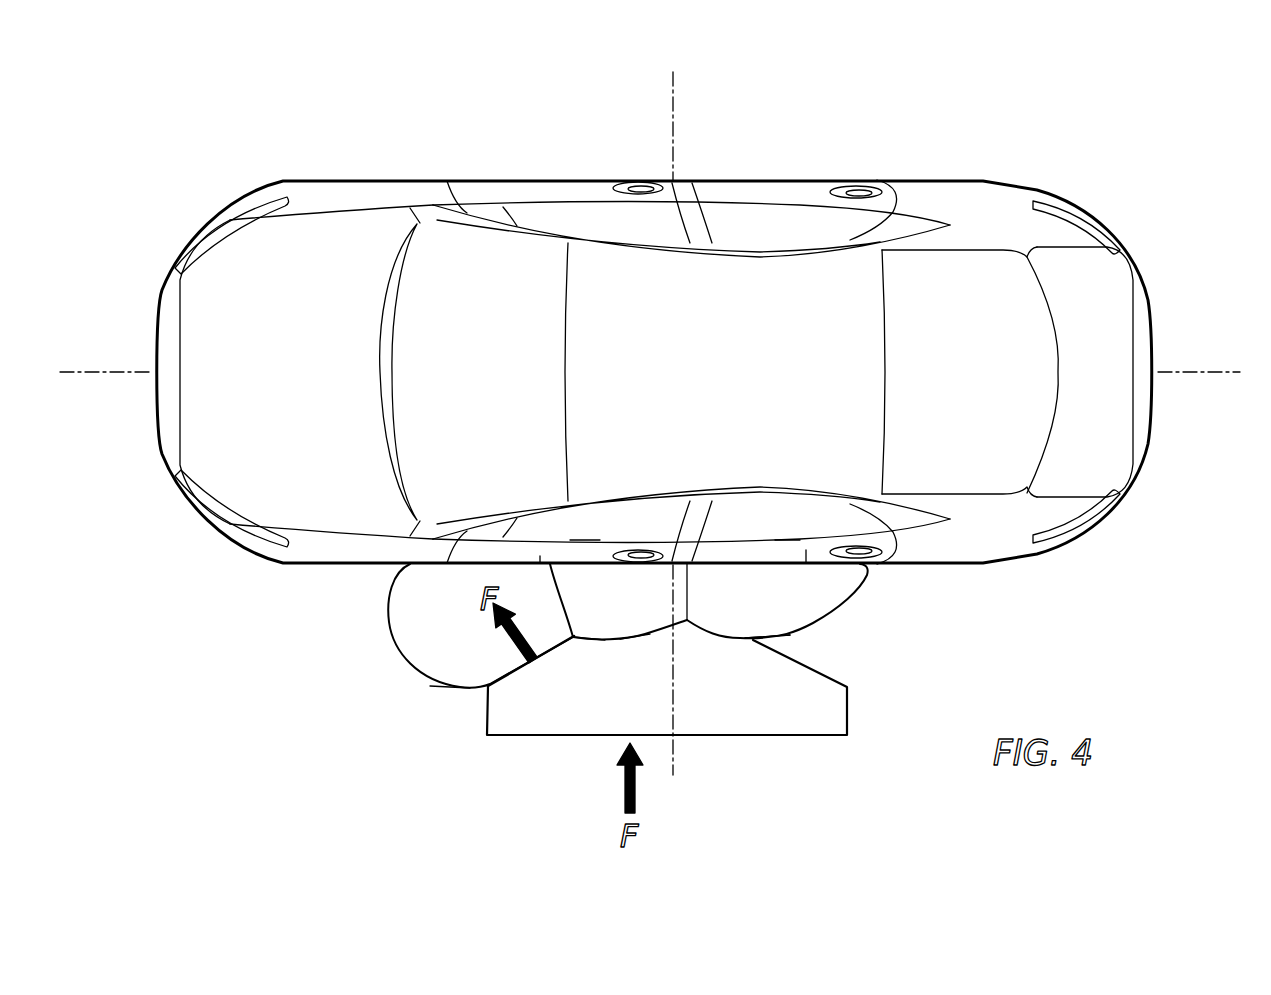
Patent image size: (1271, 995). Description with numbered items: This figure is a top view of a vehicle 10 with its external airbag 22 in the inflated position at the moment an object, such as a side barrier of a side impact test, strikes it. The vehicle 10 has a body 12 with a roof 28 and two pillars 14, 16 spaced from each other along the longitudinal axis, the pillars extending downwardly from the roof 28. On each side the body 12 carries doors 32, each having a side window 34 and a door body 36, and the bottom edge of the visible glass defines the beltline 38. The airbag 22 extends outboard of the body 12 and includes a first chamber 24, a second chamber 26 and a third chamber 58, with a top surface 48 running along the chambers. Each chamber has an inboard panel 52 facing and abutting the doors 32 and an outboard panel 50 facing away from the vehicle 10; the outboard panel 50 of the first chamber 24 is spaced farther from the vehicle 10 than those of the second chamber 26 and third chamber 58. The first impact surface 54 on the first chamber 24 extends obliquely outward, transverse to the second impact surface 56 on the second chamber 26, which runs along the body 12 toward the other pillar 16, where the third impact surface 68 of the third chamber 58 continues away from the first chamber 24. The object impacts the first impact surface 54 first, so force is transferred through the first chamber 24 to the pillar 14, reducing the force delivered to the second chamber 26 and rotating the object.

The vehicle 10 is at (156, 126).
The body 12 is at (348, 172).
The pillar 14 is at (466, 517).
The other pillar 16 is at (893, 518).
The airbag 22 is at (836, 628).
The first chamber 24 is at (384, 612).
The second chamber 26 is at (597, 629).
The roof 28 is at (691, 372).
The door 32 is at (652, 530).
The side window 34 is at (691, 372).
The door body 36 is at (541, 556).
The beltline 38 is at (582, 540).
The top surface 48 is at (600, 626).
The outboard panel 50 is at (440, 690).
The inboard panel 52 is at (441, 566).
The first impact surface 54 is at (556, 656).
The second impact surface 56 is at (605, 641).
The third chamber 58 is at (765, 630).
The third impact surface 68 is at (667, 655).